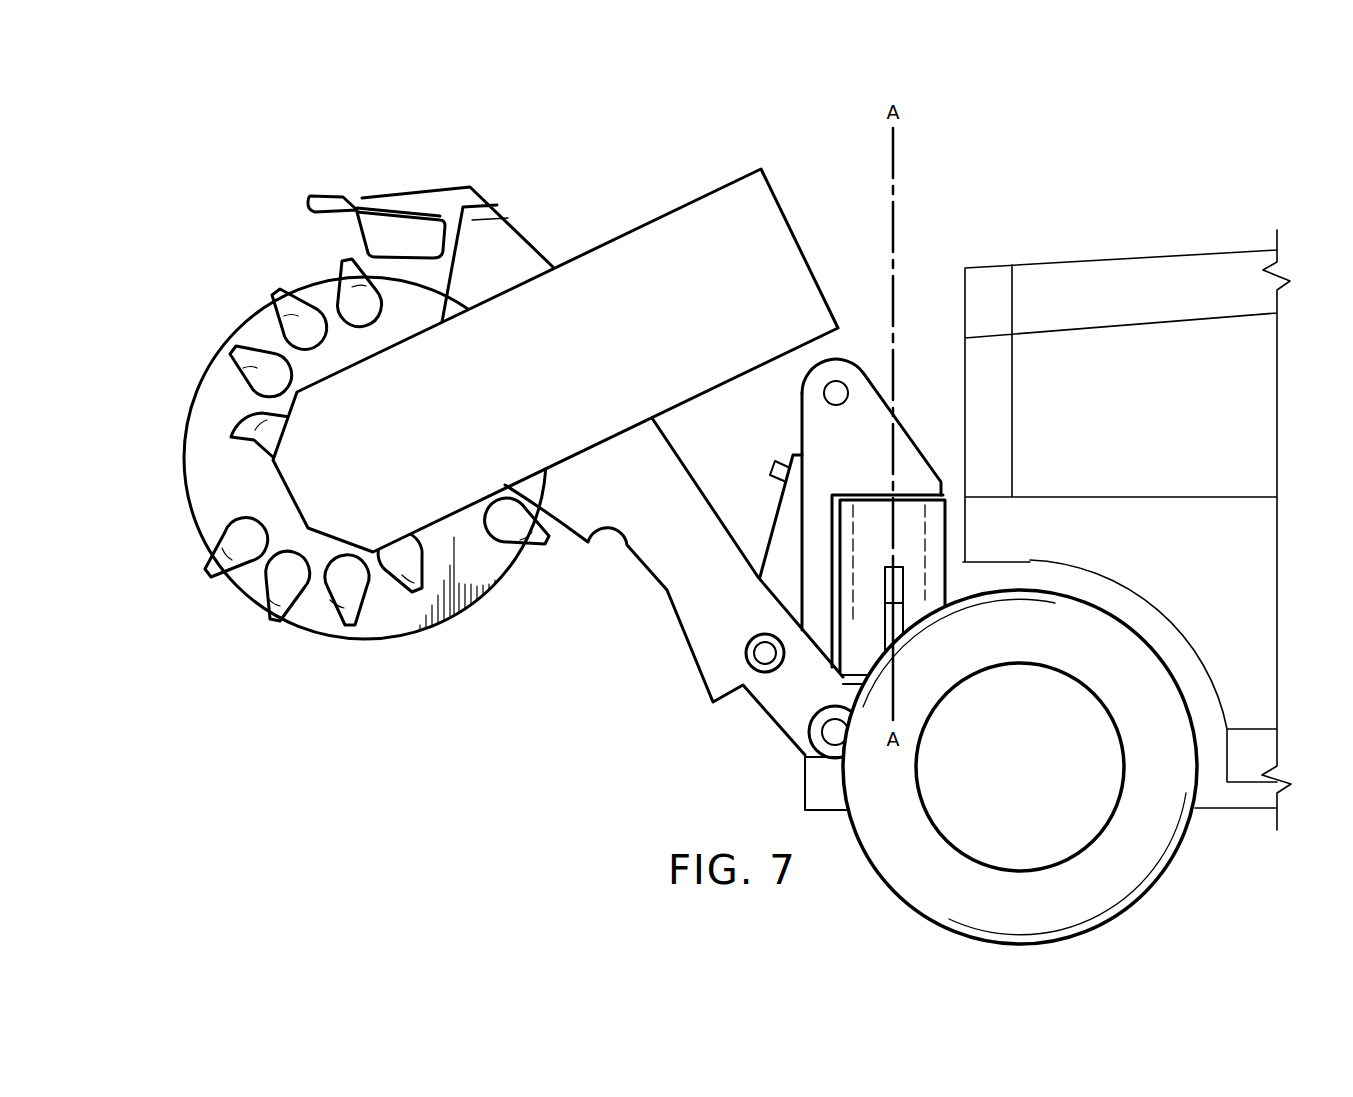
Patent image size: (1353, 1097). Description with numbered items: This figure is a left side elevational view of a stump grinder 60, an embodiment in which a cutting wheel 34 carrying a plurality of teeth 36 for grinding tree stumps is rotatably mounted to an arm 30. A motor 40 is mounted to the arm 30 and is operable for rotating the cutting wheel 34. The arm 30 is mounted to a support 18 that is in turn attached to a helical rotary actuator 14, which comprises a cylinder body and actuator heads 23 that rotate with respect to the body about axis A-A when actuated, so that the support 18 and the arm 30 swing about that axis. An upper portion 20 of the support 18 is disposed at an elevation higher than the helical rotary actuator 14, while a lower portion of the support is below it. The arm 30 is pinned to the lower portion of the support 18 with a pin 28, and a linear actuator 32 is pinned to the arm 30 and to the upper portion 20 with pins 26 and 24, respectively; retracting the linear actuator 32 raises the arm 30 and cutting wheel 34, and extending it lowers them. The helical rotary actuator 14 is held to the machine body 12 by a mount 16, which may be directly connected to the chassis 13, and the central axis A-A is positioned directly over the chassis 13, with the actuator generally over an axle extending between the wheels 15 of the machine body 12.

The machine body 12 is at (1128, 258).
The chassis 13 is at (805, 795).
The helical rotary actuator 14 is at (866, 515).
The wheels 15 is at (1185, 842).
The mount 16 is at (904, 596).
The support 18 is at (905, 435).
The upper portion 20 is at (800, 436).
The actuator heads 23 is at (917, 500).
The pin 24 is at (840, 382).
The pin 26 is at (757, 638).
The pin 28 is at (809, 742).
The arm 30 is at (633, 558).
The linear actuator 32 is at (772, 505).
The cutting wheel 34 is at (199, 384).
The teeth 36 is at (242, 441).
The motor 40 is at (663, 214).
The stump grinder 60 is at (511, 117).